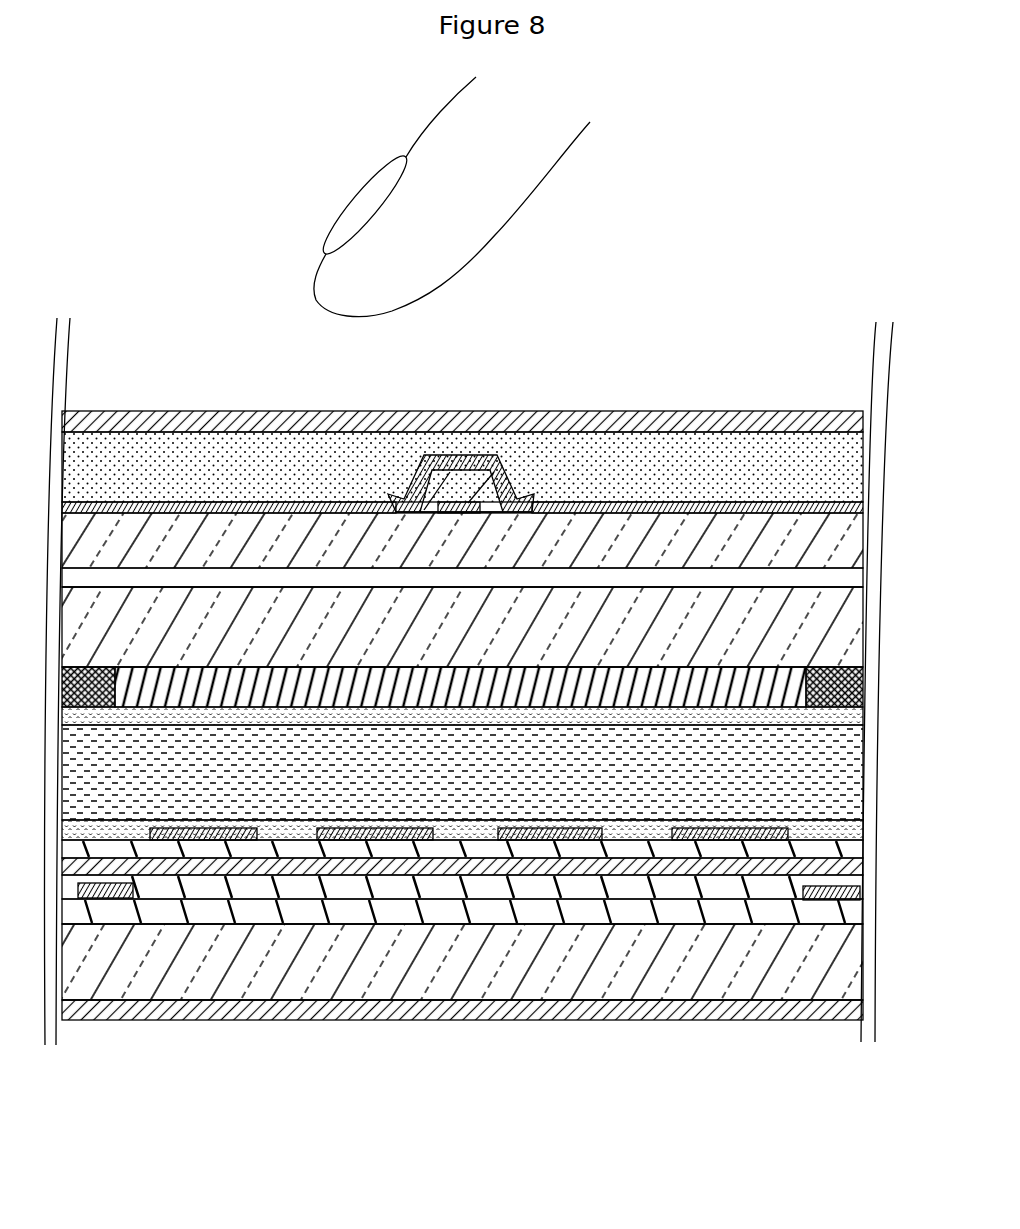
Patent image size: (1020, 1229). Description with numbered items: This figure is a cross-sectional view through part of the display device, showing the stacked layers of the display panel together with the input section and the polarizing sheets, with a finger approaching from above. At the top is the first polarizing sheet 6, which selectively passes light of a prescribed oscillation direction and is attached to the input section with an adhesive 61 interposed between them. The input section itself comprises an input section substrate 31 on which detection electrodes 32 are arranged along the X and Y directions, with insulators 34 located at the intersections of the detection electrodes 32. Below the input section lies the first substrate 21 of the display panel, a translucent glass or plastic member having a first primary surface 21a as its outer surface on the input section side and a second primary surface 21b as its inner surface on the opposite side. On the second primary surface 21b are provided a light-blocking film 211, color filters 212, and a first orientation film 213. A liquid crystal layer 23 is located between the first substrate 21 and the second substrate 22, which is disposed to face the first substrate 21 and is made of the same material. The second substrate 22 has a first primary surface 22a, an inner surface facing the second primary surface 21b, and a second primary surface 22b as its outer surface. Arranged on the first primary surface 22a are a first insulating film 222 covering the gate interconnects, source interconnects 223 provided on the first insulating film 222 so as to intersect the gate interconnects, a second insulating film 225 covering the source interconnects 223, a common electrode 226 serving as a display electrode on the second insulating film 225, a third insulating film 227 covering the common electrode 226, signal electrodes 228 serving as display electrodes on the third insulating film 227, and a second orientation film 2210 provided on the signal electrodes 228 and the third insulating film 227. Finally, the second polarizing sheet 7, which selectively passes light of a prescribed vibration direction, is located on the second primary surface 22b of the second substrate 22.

The first polarizing sheet 6 is at (344, 425).
The adhesive 61 is at (405, 452).
The detection electrodes 32 is at (460, 495).
The insulators 34 is at (483, 457).
The input section substrate 31 is at (303, 527).
The first primary surface 21a is at (260, 590).
The first substrate 21 is at (212, 620).
The second primary surface 21b is at (140, 697).
The color filters 212 is at (733, 693).
The light-blocking film 211 is at (840, 670).
The first orientation film 213 is at (790, 720).
The liquid crystal layer 23 is at (627, 793).
The second orientation film 2210 is at (635, 830).
The signal electrodes 228 is at (407, 843).
The third insulating film 227 is at (265, 850).
The common electrode 226 is at (691, 868).
The second insulating film 225 is at (587, 888).
The source interconnects 223 is at (105, 898).
The first insulating film 222 is at (537, 917).
The first primary surface 22a is at (497, 925).
The second substrate 22 is at (192, 963).
The second primary surface 22b is at (343, 1013).
The second polarizing sheet 7 is at (155, 1013).